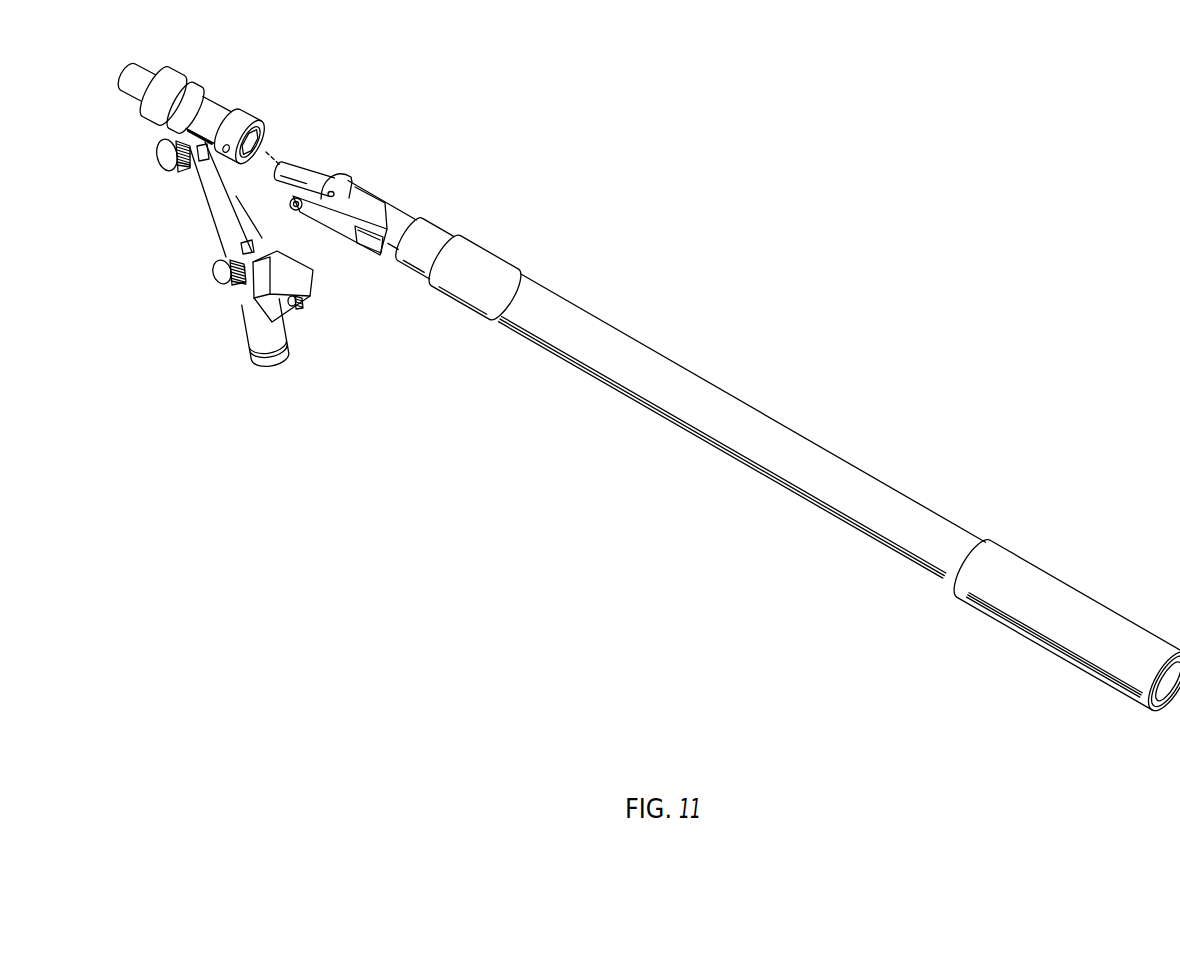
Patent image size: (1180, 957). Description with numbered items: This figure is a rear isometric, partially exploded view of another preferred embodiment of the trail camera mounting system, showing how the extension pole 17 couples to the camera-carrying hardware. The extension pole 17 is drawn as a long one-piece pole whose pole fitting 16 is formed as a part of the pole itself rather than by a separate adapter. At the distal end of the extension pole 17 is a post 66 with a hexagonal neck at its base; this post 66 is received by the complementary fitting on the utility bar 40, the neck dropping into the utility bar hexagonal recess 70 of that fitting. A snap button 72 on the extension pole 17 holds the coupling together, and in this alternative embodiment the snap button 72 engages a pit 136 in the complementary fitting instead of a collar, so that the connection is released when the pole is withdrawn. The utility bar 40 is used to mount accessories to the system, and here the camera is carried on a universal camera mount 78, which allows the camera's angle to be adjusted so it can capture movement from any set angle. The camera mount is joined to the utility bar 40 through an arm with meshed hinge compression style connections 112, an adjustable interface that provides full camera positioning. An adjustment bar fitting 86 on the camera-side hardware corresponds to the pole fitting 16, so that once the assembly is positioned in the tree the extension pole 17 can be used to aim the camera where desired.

The pole fitting 16 is at (383, 196).
The extension pole 17 is at (788, 452).
The utility bar 40 is at (175, 64).
The post 66 is at (301, 172).
The utility bar hexagonal recess 70 is at (263, 130).
The snap button 72 is at (297, 210).
The universal camera mount 78 is at (297, 308).
The adjustment bar fitting 86 is at (253, 352).
The arm with meshed hinge compression style connections 112 is at (208, 207).
The pit 136 is at (226, 146).